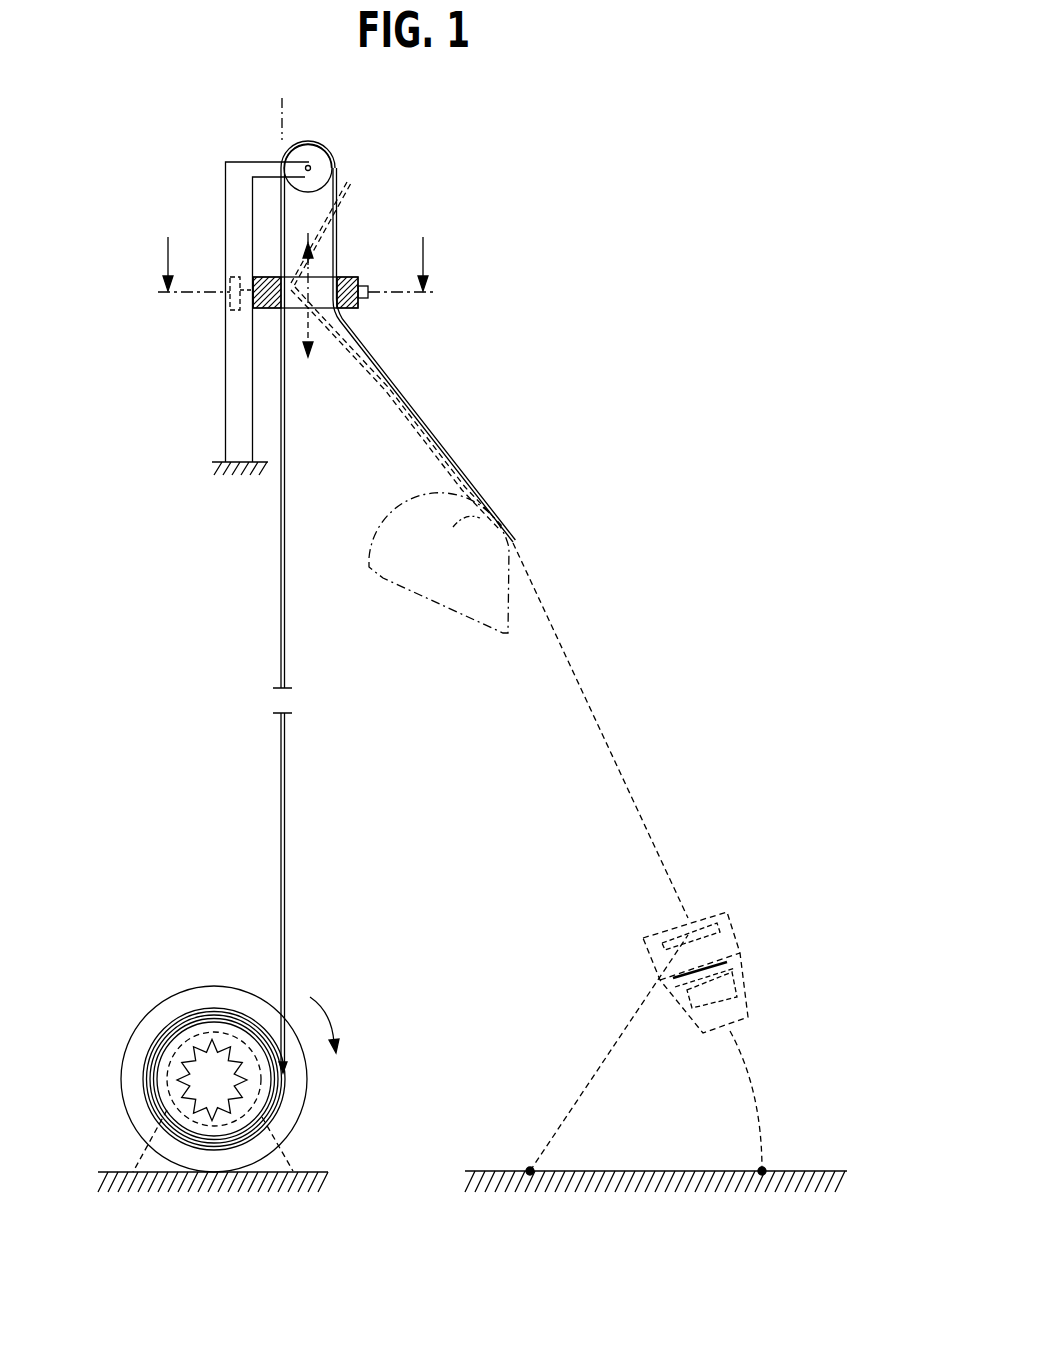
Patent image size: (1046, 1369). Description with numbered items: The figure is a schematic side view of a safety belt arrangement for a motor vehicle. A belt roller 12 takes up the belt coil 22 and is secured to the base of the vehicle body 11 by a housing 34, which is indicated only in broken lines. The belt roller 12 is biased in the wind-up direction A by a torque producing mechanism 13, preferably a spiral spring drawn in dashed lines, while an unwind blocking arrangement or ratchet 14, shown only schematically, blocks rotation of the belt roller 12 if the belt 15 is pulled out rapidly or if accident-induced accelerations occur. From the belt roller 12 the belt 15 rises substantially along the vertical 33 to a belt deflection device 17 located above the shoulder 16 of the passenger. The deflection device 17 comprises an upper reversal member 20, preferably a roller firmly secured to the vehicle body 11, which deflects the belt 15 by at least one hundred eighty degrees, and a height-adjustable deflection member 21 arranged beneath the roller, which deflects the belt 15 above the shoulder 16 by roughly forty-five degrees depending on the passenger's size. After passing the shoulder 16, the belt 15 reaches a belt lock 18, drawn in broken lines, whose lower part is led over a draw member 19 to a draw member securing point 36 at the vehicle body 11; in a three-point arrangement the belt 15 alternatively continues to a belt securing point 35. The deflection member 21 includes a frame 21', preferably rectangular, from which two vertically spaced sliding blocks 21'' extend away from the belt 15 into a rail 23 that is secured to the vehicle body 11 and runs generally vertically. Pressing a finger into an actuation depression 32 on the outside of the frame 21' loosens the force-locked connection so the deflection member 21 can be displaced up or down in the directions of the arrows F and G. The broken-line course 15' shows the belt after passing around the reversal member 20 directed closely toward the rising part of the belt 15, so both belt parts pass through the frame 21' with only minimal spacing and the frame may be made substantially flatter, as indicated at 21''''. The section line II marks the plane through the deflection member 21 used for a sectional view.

The vehicle body 11 is at (237, 470).
The belt roller 12 is at (293, 1080).
The torque producing mechanism 13 is at (165, 1075).
The unwind blocking arrangement 14 is at (205, 1052).
The belt 15 is at (503, 656).
The belt course after the reversal member 15' is at (397, 342).
The shoulder 16 is at (487, 517).
The belt deflection device 17 is at (354, 212).
The belt lock 18 is at (737, 927).
The draw member 19 is at (750, 1082).
The upper reversal member 20 is at (321, 157).
The deflection member 21 is at (330, 266).
The frame 21' is at (225, 252).
The sliding blocks 21'' is at (213, 308).
The flatter frame 21'''' is at (382, 316).
The belt coil 22 is at (165, 1028).
The rail 23 is at (232, 398).
The actuation depression 32 is at (368, 293).
The vertical 33 is at (287, 112).
The housing 34 is at (282, 1157).
The belt securing point 35 is at (527, 1168).
The draw member securing point 36 is at (765, 1168).
The wind-up direction A is at (312, 998).
The upward displacement direction F is at (314, 248).
The downward displacement direction G is at (317, 355).
The section line II is at (295, 271).